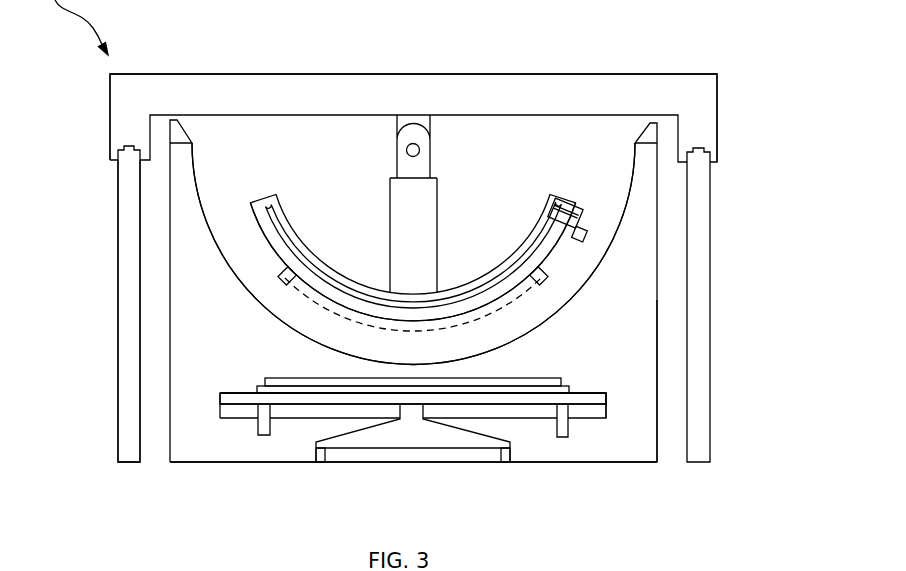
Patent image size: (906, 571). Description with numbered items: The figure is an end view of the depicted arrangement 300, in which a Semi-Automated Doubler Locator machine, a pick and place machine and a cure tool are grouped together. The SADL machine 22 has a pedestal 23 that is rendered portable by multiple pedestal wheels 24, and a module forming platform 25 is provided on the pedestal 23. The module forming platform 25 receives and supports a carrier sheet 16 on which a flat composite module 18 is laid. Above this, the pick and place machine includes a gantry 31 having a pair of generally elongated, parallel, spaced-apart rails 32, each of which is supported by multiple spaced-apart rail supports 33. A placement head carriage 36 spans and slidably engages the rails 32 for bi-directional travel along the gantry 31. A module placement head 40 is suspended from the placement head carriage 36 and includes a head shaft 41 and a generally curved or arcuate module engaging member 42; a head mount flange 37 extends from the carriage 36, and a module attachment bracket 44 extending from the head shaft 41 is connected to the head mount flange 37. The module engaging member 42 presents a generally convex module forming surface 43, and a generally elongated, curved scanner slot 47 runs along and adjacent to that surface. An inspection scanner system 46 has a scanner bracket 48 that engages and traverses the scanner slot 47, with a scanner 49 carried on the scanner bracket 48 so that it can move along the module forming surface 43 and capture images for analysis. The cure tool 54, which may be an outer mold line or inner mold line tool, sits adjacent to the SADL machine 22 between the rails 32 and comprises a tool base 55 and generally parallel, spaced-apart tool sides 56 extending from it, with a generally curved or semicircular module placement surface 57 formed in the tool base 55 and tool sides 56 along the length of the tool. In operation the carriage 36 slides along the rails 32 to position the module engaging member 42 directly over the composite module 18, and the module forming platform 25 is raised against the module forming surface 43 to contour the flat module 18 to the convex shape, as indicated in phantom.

The wafer processing apparatus 300 is at (138, 570).
The placement head carriage 36 is at (560, 100).
The rails 32 is at (128, 147).
The gantry 31 is at (105, 212).
The rail supports 33 is at (127, 410).
The tool sides 56 is at (185, 253).
The module placement surface 57 is at (312, 340).
The tool base 55 is at (612, 452).
The cure tool 54 is at (651, 477).
The head mount flange 37 is at (428, 122).
The module attachment bracket 44 is at (422, 165).
The head shaft 41 is at (415, 245).
The module placement head 40 is at (292, 202).
The module engaging member 42 is at (256, 197).
The scanner slot 47 is at (530, 243).
The module forming surface 43 is at (270, 243).
The inspection scanner system 46 is at (590, 203).
The scanner bracket 48 is at (560, 205).
The scanner 49 is at (575, 243).
The composite module 18 is at (411, 330).
The carrier sheet 16 is at (257, 393).
The module forming platform 25 is at (588, 397).
The SADL machine 22 is at (234, 438).
The pedestal wheels 24 is at (322, 457).
The pedestal 23 is at (466, 440).